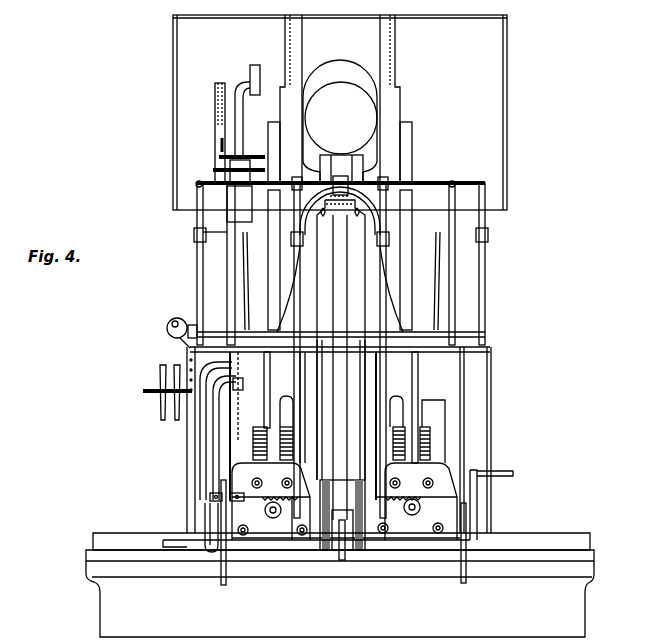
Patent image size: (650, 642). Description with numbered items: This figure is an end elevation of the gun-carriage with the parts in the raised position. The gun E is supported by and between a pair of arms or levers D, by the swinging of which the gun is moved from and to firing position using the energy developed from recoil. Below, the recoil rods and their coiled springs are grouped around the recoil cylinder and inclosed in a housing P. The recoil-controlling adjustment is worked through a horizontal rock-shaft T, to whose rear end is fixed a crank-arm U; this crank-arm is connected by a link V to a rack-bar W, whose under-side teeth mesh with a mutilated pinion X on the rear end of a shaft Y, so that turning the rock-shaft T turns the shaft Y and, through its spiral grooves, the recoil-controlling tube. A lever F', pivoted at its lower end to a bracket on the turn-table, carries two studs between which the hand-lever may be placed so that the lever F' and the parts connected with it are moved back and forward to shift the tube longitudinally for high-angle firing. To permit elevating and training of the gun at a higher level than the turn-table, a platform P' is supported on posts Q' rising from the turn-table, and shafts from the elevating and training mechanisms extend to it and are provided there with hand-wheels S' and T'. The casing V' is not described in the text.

The valve casing V' is at (340, 112).
The gun E is at (340, 121).
The hand-wheel T' is at (226, 133).
The hand-wheel S' is at (202, 282).
The arms or levers D is at (342, 260).
The platform P' is at (341, 350).
The posts Q' is at (266, 390).
The rod Q is at (417, 407).
The lever F' is at (383, 407).
The housing P is at (312, 492).
The link V is at (203, 487).
The crank-arm U is at (217, 517).
The shaft Y is at (273, 502).
The mutilated pinion X is at (340, 529).
The rock-shaft T is at (343, 537).
The rack-bar W is at (290, 540).